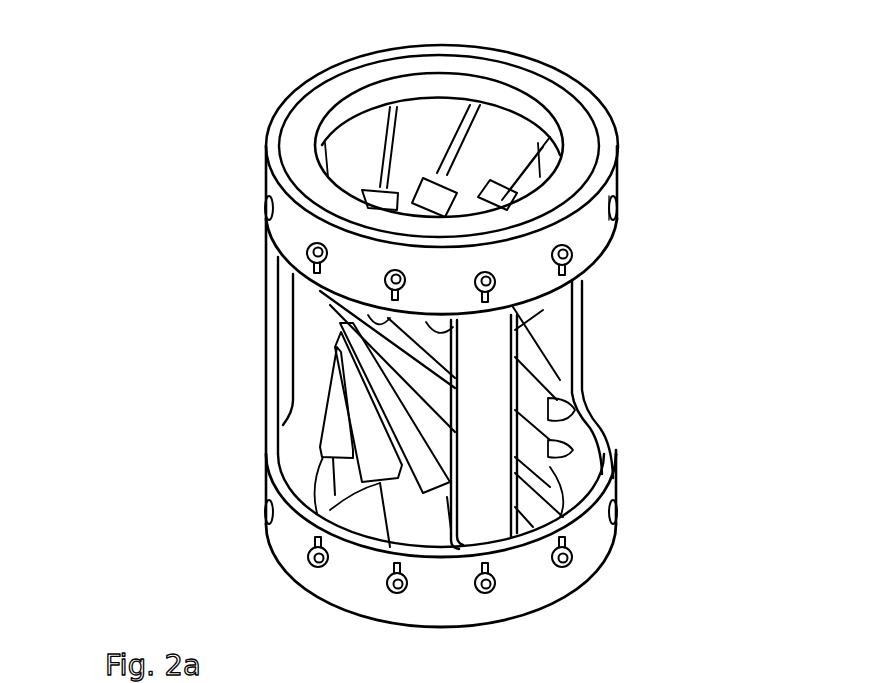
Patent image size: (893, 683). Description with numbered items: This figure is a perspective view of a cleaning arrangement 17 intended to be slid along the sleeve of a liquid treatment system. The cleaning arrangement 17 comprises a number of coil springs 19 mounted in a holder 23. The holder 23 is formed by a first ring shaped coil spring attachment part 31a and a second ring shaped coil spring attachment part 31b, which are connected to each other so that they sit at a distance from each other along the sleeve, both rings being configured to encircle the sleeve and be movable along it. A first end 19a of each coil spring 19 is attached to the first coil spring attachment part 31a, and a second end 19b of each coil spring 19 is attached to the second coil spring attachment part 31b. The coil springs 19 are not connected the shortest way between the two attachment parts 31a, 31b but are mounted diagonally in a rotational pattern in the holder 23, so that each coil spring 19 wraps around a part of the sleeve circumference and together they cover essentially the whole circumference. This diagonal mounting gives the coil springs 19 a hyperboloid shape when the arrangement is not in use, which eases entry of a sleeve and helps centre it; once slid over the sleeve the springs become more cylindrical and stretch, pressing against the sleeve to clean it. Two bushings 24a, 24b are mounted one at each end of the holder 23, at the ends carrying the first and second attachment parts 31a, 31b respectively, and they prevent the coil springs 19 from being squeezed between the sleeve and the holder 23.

The cleaning arrangement 17 is at (157, 184).
The coil springs 19 is at (370, 429).
The first end of coil spring 19a is at (371, 135).
The second end of coil spring 19b is at (570, 460).
The holder 23 is at (258, 293).
The bushing 24a is at (567, 102).
The bushing 24b is at (577, 607).
The first ring shaped coil spring attachment part 31a is at (628, 160).
The second ring shaped coil spring attachment part 31b is at (630, 529).